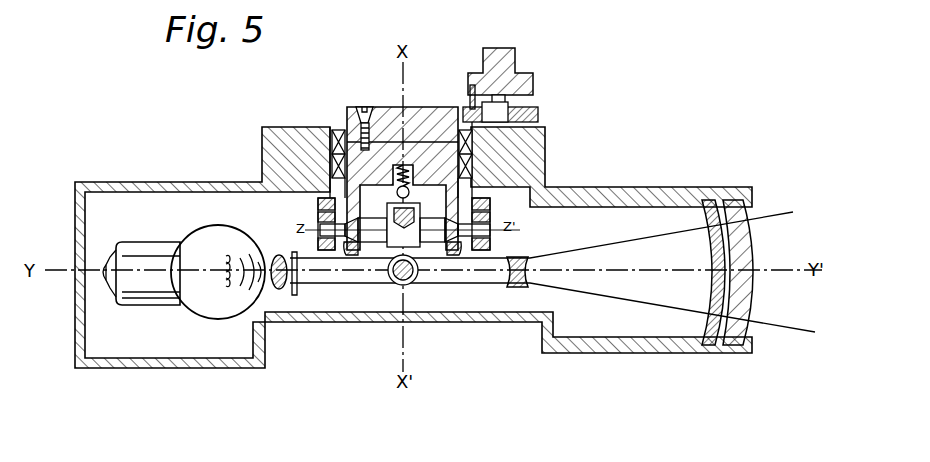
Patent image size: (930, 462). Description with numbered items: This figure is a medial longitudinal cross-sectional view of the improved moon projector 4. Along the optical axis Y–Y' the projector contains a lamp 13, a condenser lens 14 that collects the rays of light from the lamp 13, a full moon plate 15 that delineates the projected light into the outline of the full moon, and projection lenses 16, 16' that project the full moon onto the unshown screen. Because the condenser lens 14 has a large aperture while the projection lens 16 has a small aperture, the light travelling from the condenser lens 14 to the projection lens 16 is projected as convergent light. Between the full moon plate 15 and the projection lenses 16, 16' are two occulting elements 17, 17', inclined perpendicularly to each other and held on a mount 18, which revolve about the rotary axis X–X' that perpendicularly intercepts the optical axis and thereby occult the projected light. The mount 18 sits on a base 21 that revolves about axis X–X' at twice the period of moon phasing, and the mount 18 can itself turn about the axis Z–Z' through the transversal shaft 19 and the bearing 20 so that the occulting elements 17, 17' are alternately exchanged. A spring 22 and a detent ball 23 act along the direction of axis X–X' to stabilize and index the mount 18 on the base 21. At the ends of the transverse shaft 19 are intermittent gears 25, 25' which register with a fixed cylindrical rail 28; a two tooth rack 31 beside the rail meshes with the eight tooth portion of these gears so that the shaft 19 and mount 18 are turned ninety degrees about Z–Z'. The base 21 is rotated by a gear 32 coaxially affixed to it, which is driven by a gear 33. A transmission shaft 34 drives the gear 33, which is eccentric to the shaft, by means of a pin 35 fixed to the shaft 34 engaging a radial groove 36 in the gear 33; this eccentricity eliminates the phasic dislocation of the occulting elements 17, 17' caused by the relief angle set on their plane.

The moon projector 4 is at (215, 128).
The lamp 13 is at (190, 292).
The condenser lens 14 is at (283, 291).
The full moon plate 15 is at (297, 296).
The projection lens 16 is at (517, 307).
The projection lens 16' is at (727, 294).
The occulting element 17 is at (379, 265).
The occulting element 17' is at (348, 265).
The mount 18 is at (417, 248).
The transversal shaft 19 is at (433, 244).
The bearing 20 is at (462, 244).
The base 21 is at (360, 160).
The spring 22 is at (404, 172).
The ball 23 is at (396, 193).
The intermittent gear 25 is at (315, 233).
The intermittent gear 25' is at (496, 233).
The cylindrical rail 28 is at (490, 203).
The two tooth rack 31 is at (318, 205).
The gear 32 is at (388, 124).
The gear 33 is at (530, 107).
The transmission shaft 34 is at (512, 58).
The pin 35 is at (471, 108).
The groove 36 is at (465, 129).